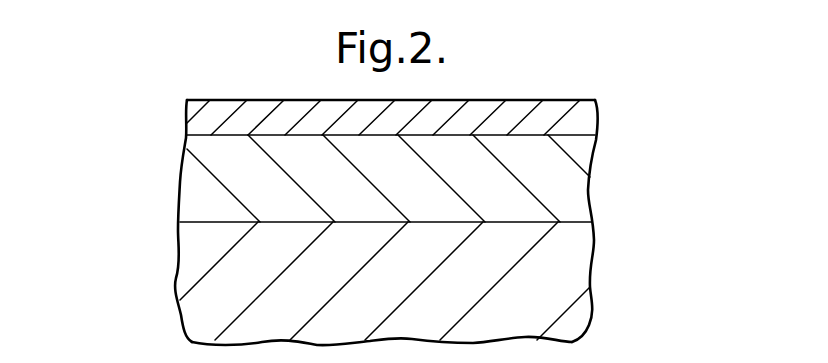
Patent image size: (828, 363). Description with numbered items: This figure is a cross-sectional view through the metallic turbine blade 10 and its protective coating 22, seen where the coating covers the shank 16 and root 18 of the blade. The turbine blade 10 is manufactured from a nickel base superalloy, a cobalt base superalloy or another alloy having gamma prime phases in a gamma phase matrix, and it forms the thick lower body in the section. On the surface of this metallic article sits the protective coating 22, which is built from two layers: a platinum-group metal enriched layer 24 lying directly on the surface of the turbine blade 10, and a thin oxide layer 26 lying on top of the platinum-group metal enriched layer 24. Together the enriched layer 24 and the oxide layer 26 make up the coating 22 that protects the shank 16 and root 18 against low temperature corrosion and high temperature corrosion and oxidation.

The protective coating 22 is at (638, 95).
The gas turbine engine blade 10 is at (590, 286).
The thin oxide layer 26 is at (186, 118).
The platinum-group metal enriched layer 24 is at (182, 185).
The root 18 is at (190, 290).
The shank 16 is at (385, 281).